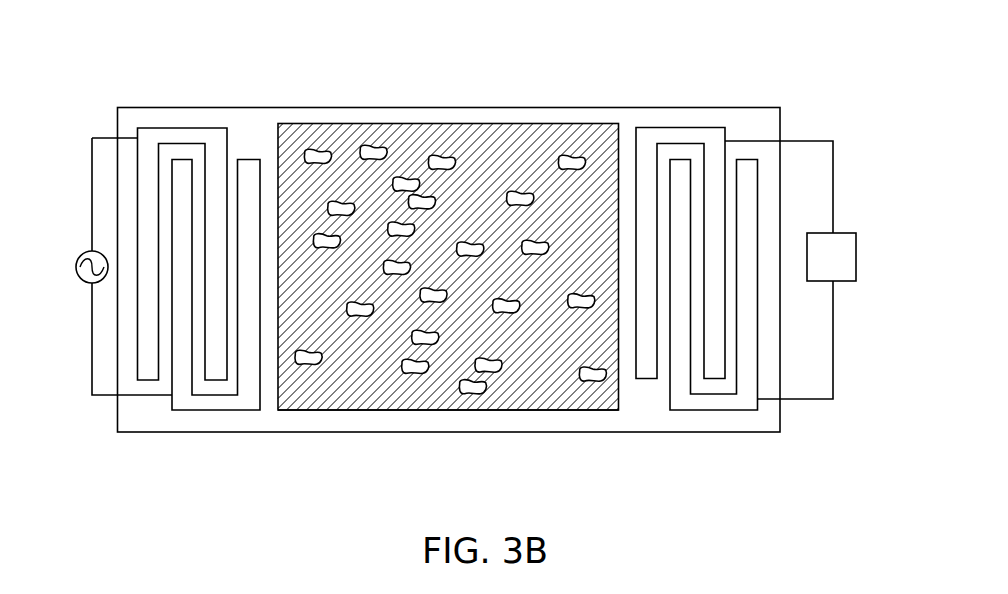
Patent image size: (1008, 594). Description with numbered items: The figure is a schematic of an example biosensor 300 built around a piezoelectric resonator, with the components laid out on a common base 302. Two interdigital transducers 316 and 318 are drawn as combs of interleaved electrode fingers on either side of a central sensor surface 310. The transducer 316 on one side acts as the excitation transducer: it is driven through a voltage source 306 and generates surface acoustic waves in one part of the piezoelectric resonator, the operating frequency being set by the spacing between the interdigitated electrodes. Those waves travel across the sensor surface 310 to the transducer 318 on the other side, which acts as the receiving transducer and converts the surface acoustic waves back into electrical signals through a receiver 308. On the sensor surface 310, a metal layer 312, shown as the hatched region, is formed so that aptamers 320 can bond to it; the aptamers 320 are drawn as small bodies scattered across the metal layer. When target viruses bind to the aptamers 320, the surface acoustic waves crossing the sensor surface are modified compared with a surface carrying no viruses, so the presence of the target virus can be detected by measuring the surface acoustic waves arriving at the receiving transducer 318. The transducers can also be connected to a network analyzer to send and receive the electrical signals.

The sensor device 300 is at (249, 62).
The substrate 302 is at (147, 425).
The voltage source 306 is at (76, 270).
The receiver 308 is at (850, 268).
The sensor surface 310 is at (378, 417).
The metal layer 312 is at (542, 402).
The interdigital transducer 316 is at (243, 408).
The interdigital transducer 318 is at (702, 412).
The aptamers 320 is at (466, 390).